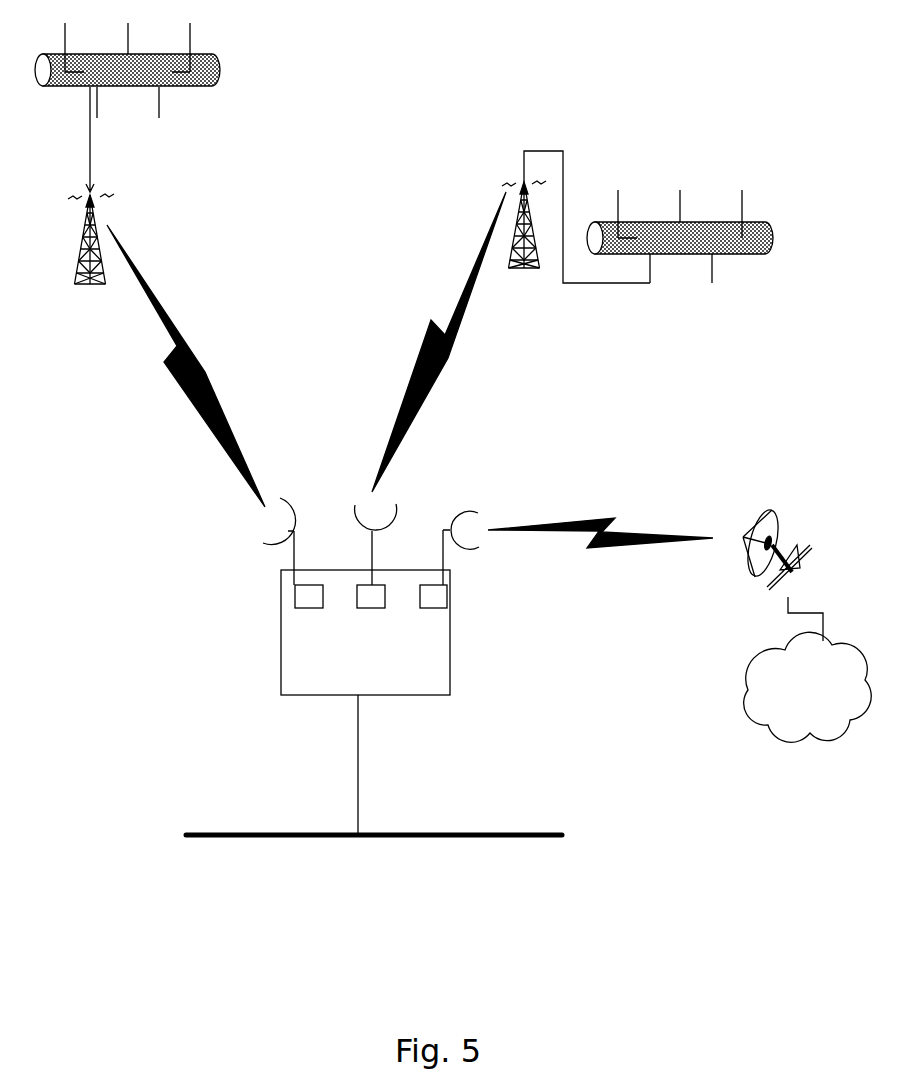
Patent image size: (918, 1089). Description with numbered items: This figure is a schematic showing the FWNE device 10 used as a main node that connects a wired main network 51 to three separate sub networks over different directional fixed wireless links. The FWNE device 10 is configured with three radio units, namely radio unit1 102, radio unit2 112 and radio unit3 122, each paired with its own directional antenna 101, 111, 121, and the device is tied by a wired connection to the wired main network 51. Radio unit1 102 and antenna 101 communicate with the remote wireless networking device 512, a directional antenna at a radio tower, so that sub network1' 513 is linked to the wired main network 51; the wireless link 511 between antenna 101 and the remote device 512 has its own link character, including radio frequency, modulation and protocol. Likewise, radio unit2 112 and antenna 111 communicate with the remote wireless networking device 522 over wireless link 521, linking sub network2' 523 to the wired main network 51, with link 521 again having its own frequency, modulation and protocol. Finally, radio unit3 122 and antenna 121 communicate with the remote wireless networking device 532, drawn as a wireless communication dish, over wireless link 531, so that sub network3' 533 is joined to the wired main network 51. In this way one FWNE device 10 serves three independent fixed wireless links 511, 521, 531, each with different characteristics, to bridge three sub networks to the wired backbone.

The FWNE device 10 is at (465, 647).
The wired main network 51 is at (513, 832).
The directional antenna 101 is at (268, 541).
The wireless networking radio unit1 102 is at (295, 608).
The directional antenna 111 is at (358, 518).
The wireless networking radio unit2 112 is at (383, 585).
The directional antenna 121 is at (462, 515).
The wireless networking radio unit3 122 is at (436, 609).
The wireless link 511 is at (203, 403).
The directional antenna 512 is at (92, 190).
The sub network1' 513 is at (205, 87).
The wireless link 521 is at (449, 360).
The directional antenna 522 is at (523, 182).
The sub network2' 523 is at (765, 220).
The wireless link 531 is at (583, 518).
The directional antenna 532 is at (755, 518).
The sub network3' 533 is at (744, 680).